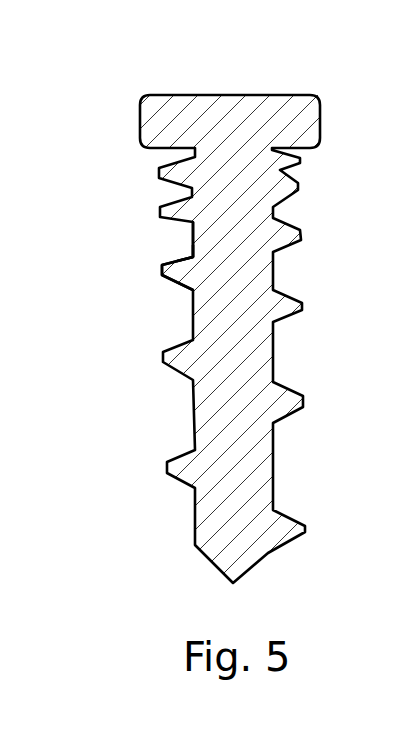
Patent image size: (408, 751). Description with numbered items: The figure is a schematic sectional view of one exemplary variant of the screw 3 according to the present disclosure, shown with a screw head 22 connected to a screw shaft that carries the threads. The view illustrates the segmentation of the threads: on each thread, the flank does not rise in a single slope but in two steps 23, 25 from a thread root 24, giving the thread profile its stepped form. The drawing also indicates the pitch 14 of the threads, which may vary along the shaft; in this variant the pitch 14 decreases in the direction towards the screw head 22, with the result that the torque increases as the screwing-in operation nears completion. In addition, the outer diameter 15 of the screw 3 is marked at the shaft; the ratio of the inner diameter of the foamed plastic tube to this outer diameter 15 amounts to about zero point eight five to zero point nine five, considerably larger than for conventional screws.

The screw 3 is at (204, 312).
The screw head 22 is at (128, 127).
The first step of the flank 23 is at (160, 266).
The thread root 24 is at (186, 236).
The second step of the flank 25 is at (179, 251).
The pitch 14 is at (300, 304).
The outer diameter 15 is at (162, 547).